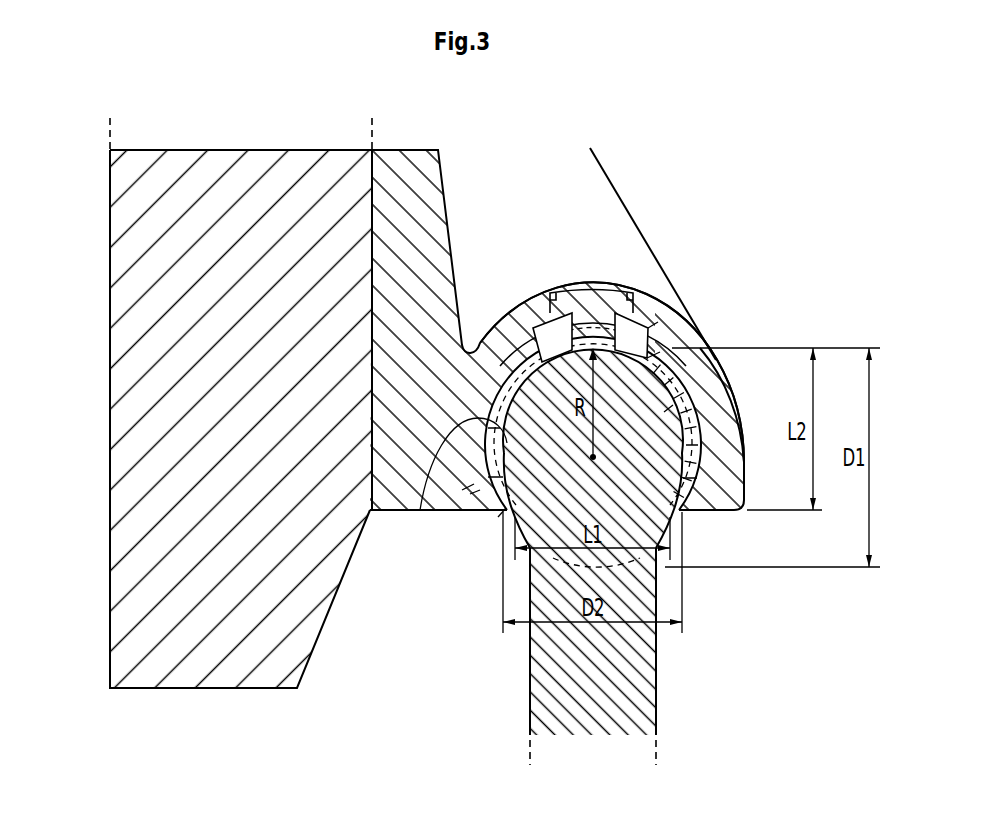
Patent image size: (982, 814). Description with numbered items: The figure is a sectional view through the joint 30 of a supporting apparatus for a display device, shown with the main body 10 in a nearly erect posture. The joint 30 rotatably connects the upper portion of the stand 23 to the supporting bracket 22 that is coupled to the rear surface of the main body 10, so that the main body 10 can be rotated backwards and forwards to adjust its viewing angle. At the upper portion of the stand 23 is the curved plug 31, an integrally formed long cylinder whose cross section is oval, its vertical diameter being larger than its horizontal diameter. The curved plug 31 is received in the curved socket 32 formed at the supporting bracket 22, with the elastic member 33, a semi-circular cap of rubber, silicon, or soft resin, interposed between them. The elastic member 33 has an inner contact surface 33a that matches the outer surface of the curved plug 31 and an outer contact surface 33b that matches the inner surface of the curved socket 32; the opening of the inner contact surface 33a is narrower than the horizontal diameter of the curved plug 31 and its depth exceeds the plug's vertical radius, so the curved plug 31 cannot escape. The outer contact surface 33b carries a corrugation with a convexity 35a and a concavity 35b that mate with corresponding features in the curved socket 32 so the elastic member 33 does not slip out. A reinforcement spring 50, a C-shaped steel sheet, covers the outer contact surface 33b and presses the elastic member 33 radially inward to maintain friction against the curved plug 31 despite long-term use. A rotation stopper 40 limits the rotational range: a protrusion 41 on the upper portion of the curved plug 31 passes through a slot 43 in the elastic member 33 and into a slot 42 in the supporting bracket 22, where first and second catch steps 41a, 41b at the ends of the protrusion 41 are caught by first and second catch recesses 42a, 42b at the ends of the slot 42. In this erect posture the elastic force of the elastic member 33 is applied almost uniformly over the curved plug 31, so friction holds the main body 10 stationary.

The main body 10 is at (135, 399).
The supporting bracket 22 is at (620, 217).
The stand 23 is at (645, 673).
The joint 30 is at (710, 522).
The curved plug 31 is at (648, 516).
The curved socket 32 is at (726, 402).
The elastic member 33 is at (693, 381).
The inner contact surface 33a is at (498, 517).
The outer contact surface 33b is at (420, 510).
The convexity 35a is at (468, 488).
The concavity 35b is at (473, 490).
The rotation stopper 40 is at (623, 283).
The protrusion 41 is at (593, 297).
The first catch step 41a is at (550, 296).
The second catch step 41b is at (636, 300).
The slot 42 is at (662, 325).
The first catch recess 42a is at (535, 328).
The second catch recess 42b is at (688, 343).
The slot 43 is at (665, 318).
The reinforcement spring 50 is at (745, 465).